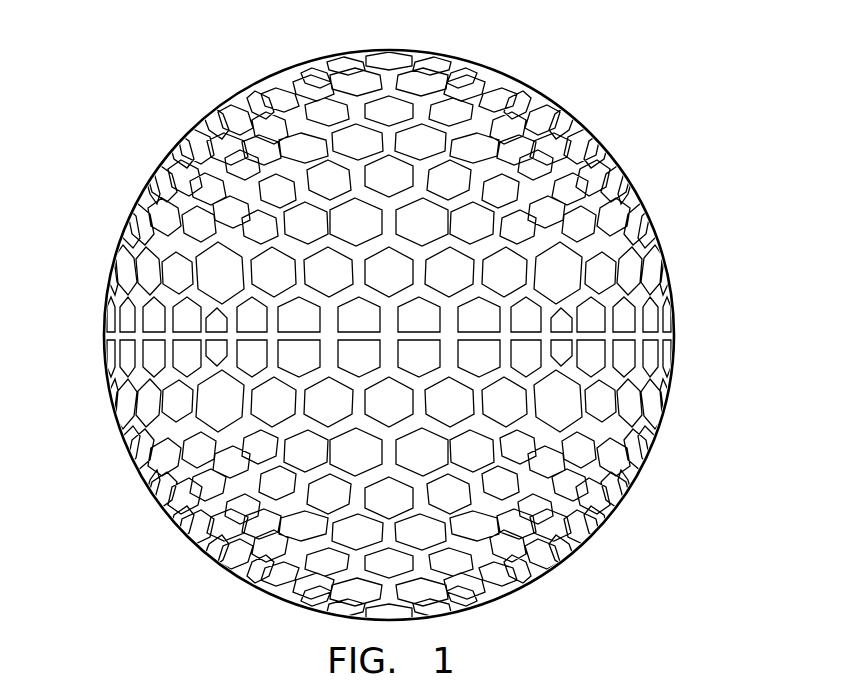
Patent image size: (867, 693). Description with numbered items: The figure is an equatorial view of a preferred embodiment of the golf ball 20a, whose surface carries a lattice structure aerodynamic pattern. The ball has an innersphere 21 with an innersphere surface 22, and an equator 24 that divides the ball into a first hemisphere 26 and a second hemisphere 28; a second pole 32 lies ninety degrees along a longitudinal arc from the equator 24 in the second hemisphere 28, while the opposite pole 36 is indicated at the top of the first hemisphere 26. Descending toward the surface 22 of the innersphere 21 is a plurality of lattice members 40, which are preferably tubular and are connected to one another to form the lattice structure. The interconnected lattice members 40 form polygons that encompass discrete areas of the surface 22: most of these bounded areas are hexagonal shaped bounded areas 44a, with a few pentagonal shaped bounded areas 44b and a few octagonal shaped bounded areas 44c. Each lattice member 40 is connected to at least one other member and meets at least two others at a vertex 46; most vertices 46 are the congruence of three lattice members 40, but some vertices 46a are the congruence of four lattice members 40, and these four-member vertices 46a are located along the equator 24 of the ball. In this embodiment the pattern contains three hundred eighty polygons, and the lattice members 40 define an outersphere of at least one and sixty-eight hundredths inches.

The golf ball 20a is at (600, 90).
The innersphere 21 is at (637, 183).
The innersphere surface 22 is at (477, 92).
The equator 24 is at (673, 332).
The first hemisphere 26 is at (143, 158).
The second hemisphere 28 is at (167, 543).
The second pole 32 is at (438, 625).
The upper pole 36 is at (362, 45).
The lattice members 40 is at (563, 138).
The hexagonal shaped bounded areas 44a is at (127, 273).
The pentagonal shaped bounded areas 44b is at (128, 353).
The octagonal shaped bounded areas 44c is at (217, 268).
The vertex 46 is at (643, 237).
The vertices of four lattice members 46a is at (608, 333).